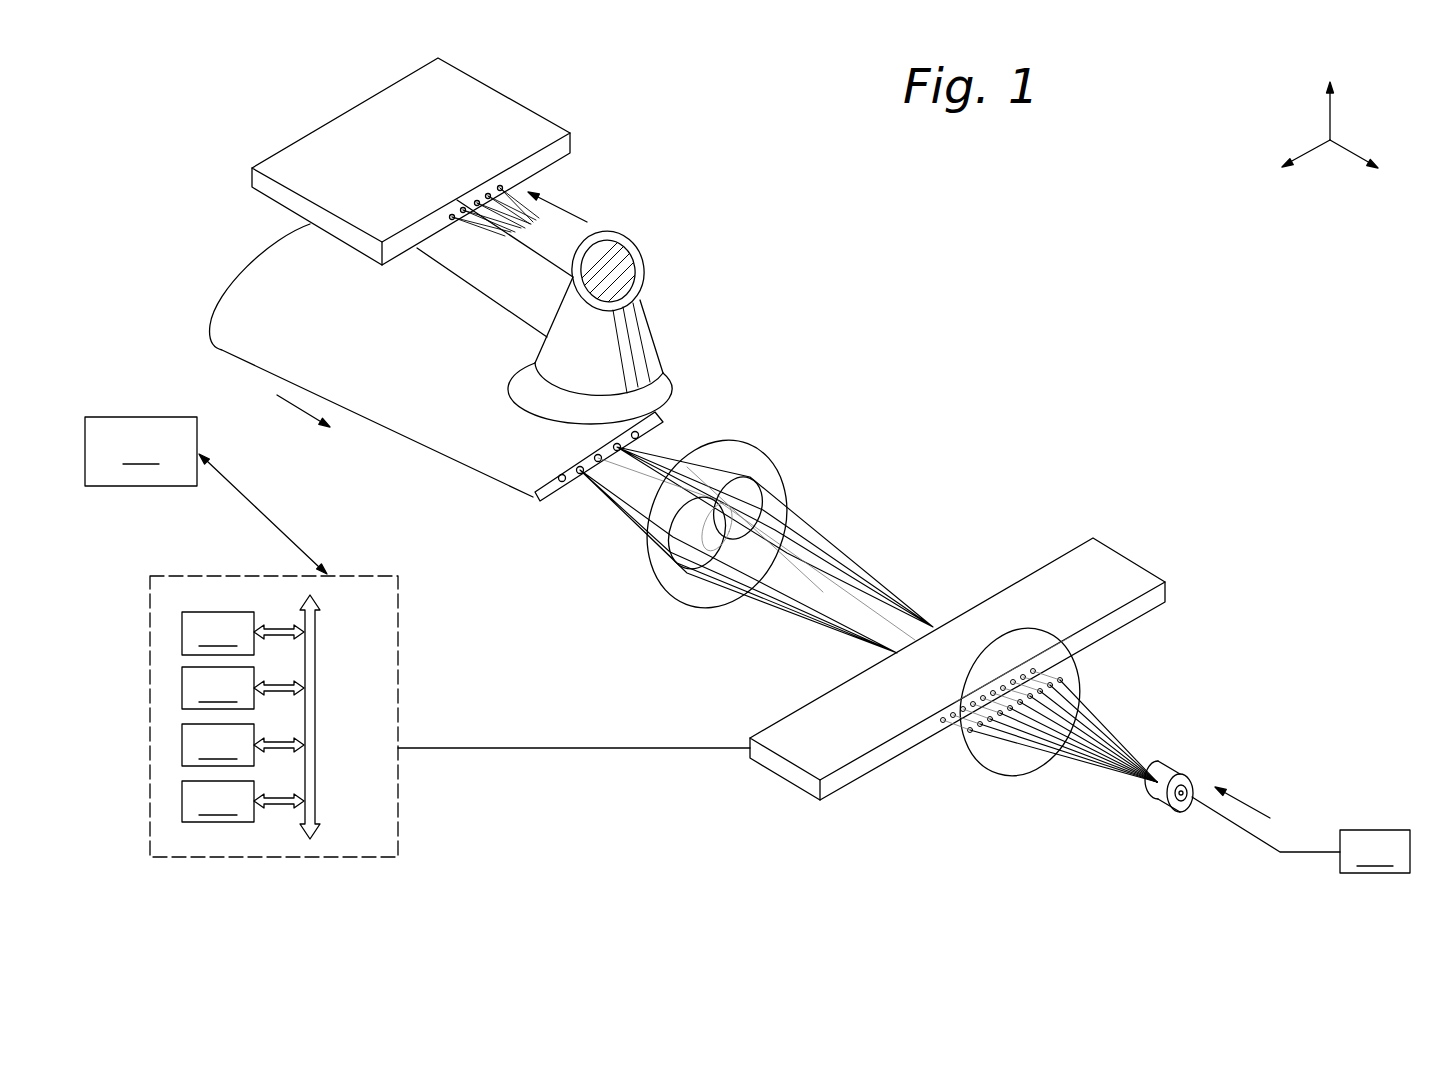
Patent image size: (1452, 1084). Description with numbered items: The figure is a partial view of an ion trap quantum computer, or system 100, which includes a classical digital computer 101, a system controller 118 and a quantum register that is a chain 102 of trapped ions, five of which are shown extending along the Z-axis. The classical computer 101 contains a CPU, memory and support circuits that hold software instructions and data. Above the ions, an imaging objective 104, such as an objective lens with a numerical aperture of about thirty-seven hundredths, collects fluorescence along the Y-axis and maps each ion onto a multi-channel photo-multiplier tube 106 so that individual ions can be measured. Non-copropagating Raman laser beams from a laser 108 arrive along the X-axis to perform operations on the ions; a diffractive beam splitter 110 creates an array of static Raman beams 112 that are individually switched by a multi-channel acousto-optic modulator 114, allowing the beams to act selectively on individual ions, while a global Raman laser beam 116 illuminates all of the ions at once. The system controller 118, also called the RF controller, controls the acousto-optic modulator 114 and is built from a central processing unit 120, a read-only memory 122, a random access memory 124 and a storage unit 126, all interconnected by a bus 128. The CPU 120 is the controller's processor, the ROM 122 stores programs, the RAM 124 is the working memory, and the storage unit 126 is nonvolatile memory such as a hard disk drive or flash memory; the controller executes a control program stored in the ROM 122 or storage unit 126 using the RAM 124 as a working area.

The ion trap quantum computer system 100 is at (915, 352).
The classical computer 101 is at (206, 495).
The chain of trapped ions 102 is at (577, 512).
The imaging objective 104 is at (652, 320).
The multi-channel photo-multiplier tube 106 is at (503, 95).
The laser 108 is at (1301, 830).
The diffractive beam splitter 110 is at (1172, 770).
The array of static Raman beams 112 is at (670, 607).
The multi-channel acousto-optic modulator 114 is at (1132, 562).
The global Raman laser beam 116 is at (366, 457).
The system controller 118 is at (231, 574).
The central processing unit 120 is at (243, 633).
The read-only memory 122 is at (243, 688).
The random access memory 124 is at (243, 745).
The storage unit 126 is at (243, 801).
The bus 128 is at (316, 719).